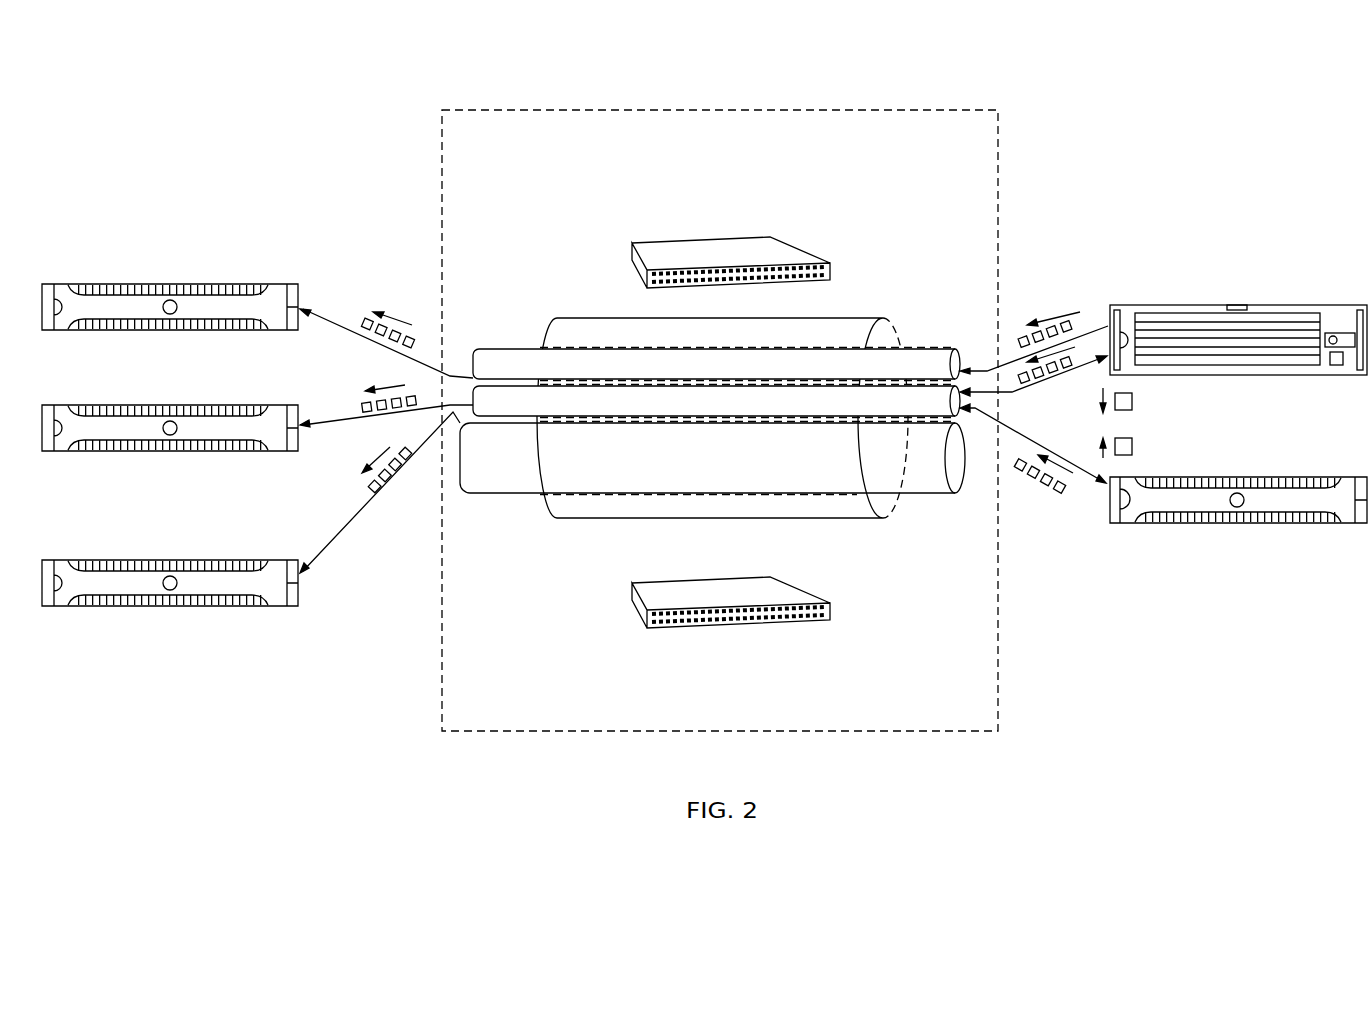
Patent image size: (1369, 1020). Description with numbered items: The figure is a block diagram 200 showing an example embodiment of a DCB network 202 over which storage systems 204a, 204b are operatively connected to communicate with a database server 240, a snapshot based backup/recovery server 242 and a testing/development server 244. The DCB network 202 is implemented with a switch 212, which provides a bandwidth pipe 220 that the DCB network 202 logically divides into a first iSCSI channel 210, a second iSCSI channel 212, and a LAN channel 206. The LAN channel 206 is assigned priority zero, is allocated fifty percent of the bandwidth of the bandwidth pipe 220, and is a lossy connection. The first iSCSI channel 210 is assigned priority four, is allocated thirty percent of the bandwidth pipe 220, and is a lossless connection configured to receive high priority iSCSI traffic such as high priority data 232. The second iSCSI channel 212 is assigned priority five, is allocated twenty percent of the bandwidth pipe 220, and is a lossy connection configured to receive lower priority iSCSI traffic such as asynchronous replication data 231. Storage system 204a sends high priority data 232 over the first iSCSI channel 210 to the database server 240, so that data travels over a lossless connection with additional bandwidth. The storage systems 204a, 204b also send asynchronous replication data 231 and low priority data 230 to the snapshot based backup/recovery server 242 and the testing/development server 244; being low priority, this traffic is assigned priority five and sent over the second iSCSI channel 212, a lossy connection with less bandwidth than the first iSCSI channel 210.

The block diagram 200 is at (1135, 77).
The DCB network 202 is at (808, 142).
The storage system 204a is at (1353, 374).
The storage system 204b is at (1232, 522).
The LAN channel 206 is at (473, 494).
The first iSCSI channel 210 is at (937, 350).
The switch 212 is at (580, 678).
The bandwidth pipe 220 is at (822, 520).
The low priority data 230 is at (1227, 287).
The asynchronous replication data 231 is at (1135, 410).
The high priority data 232 is at (1105, 260).
The database server 240 is at (137, 284).
The snapshot based backup/recovery server 242 is at (252, 447).
The testing/development server 244 is at (212, 605).